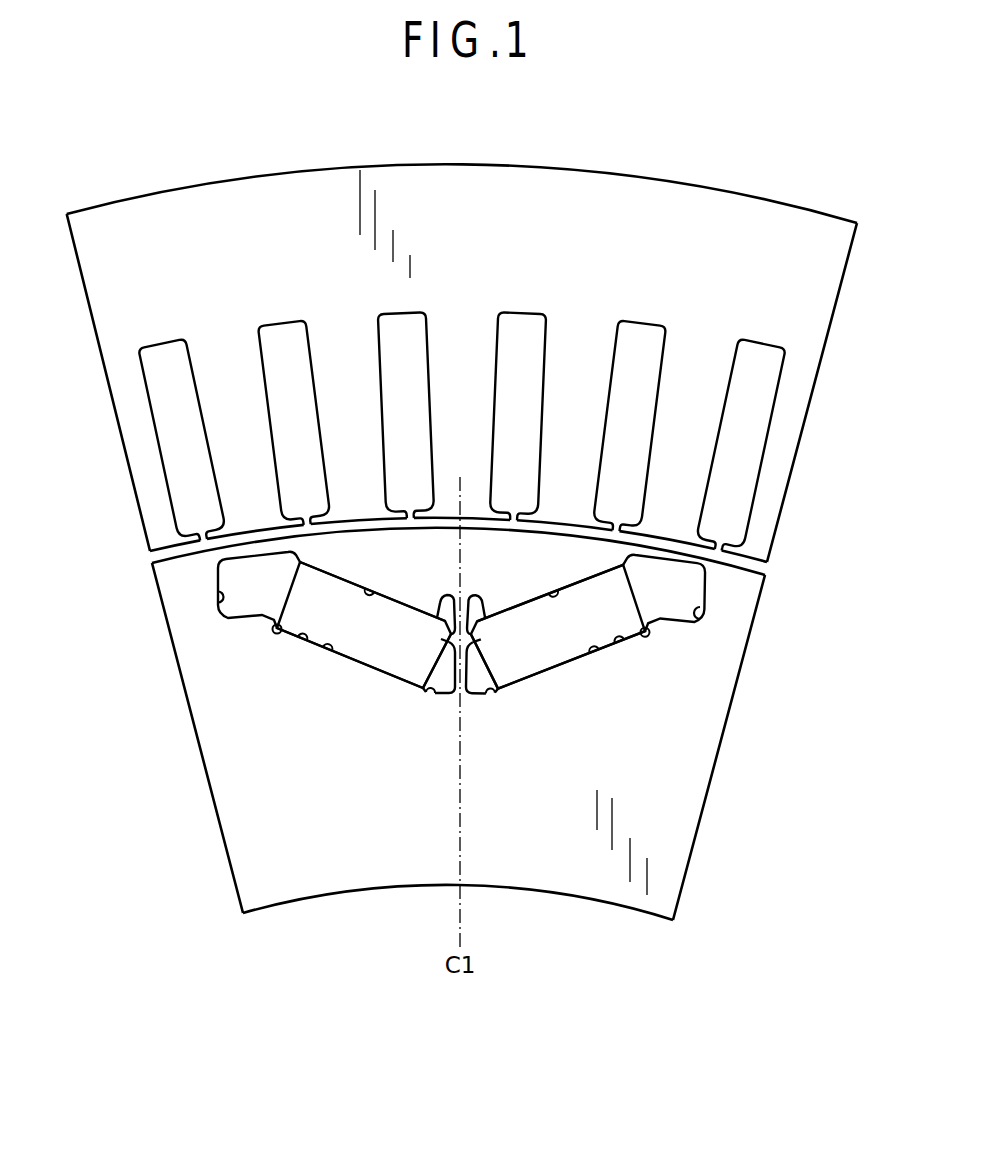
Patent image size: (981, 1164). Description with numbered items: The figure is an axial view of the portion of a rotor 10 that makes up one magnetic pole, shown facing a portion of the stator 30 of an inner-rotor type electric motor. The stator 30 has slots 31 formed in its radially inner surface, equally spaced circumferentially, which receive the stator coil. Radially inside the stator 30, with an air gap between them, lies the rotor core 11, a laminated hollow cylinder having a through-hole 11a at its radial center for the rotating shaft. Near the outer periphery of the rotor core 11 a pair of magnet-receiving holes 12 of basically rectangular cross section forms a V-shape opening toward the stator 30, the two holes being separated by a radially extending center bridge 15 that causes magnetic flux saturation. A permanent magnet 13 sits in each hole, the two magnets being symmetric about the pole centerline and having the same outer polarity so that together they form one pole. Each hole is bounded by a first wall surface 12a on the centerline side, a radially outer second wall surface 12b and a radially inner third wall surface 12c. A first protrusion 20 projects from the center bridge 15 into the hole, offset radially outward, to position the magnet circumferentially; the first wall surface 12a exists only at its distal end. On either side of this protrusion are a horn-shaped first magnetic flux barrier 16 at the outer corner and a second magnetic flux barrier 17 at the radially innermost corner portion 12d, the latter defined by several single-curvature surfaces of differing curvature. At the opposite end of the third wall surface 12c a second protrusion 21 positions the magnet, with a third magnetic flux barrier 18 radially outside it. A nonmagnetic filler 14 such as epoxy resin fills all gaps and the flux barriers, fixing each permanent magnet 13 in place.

The rotor 10 is at (188, 701).
The rotor core 11 is at (268, 835).
The through-hole 11a is at (322, 898).
The magnet-receiving hole 12 is at (302, 641).
The first wall surface 12a is at (446, 683).
The second wall surface 12b is at (372, 590).
The third wall surface 12c is at (328, 652).
The radially innermost corner portion 12d is at (422, 690).
The permanent magnet 13 is at (337, 603).
The filler 14 is at (447, 596).
The center bridge 15 is at (440, 633).
The first magnetic flux barrier 16 is at (425, 619).
The second magnetic flux barrier 17 is at (436, 690).
The third magnetic flux barrier 18 is at (226, 603).
The first protrusion 20 is at (441, 672).
The second protrusion 21 is at (280, 634).
The stator 30 is at (249, 173).
The slots 31 is at (191, 390).